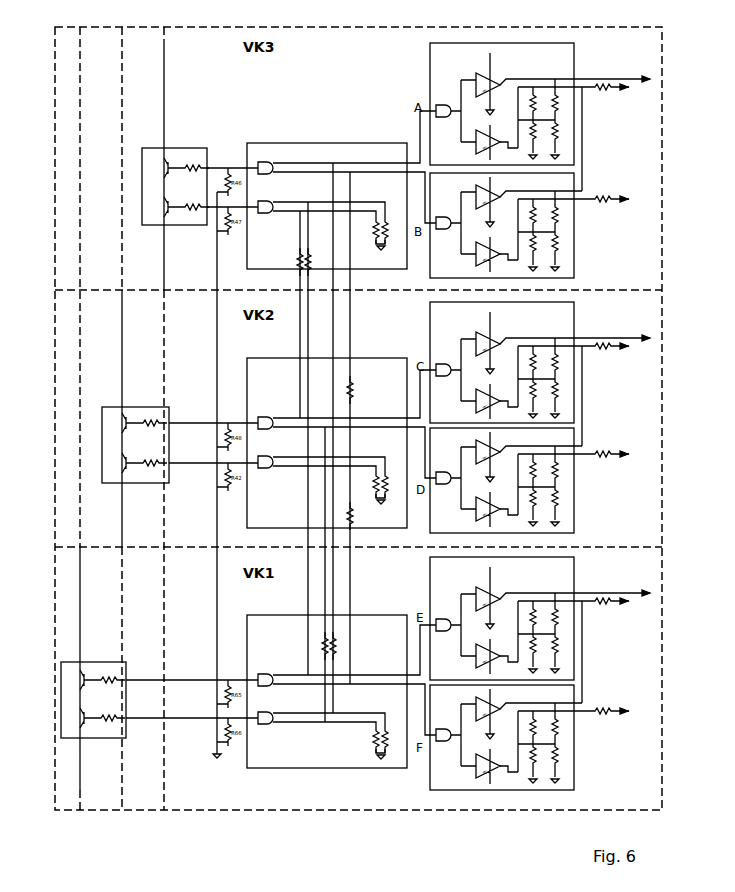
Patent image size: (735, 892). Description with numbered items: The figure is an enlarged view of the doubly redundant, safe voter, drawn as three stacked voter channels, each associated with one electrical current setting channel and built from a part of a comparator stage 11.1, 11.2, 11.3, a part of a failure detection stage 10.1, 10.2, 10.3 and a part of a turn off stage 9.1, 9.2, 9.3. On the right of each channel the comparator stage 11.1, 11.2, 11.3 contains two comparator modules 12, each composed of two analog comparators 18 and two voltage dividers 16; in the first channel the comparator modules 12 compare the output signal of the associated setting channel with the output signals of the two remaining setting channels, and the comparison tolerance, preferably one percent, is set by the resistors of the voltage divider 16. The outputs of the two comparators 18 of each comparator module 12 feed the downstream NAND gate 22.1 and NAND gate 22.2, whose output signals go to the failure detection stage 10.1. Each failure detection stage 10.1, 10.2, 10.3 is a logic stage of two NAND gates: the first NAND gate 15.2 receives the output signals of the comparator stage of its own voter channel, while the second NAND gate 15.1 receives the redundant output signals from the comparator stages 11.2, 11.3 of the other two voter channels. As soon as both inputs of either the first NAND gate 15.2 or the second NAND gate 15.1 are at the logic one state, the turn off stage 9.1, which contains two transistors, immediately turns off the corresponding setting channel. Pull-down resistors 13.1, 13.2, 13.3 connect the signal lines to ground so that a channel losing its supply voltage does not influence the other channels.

The turn off stage 9.1 is at (97, 662).
The turn off stage 9.2 is at (139, 408).
The turn off stage 9.3 is at (173, 148).
The failure detection stage 10.1 is at (358, 615).
The failure detection stage 10.2 is at (358, 358).
The failure detection stage 10.3 is at (358, 143).
The comparator stage 11.1 is at (578, 584).
The comparator stage 11.2 is at (578, 328).
The comparator stage 11.3 is at (578, 68).
The comparator module 12 is at (575, 150).
The pull-down resistors 13.1 is at (385, 712).
The pull-down resistors 13.2 is at (385, 456).
The pull-down resistors 13.3 is at (385, 202).
The second NAND gate 15.1 is at (279, 734).
The first NAND gate 15.2 is at (279, 677).
The voltage divider 16 is at (550, 114).
The comparator 18 is at (508, 76).
The NAND gate 22.1 is at (444, 746).
The NAND gate 22.2 is at (444, 636).